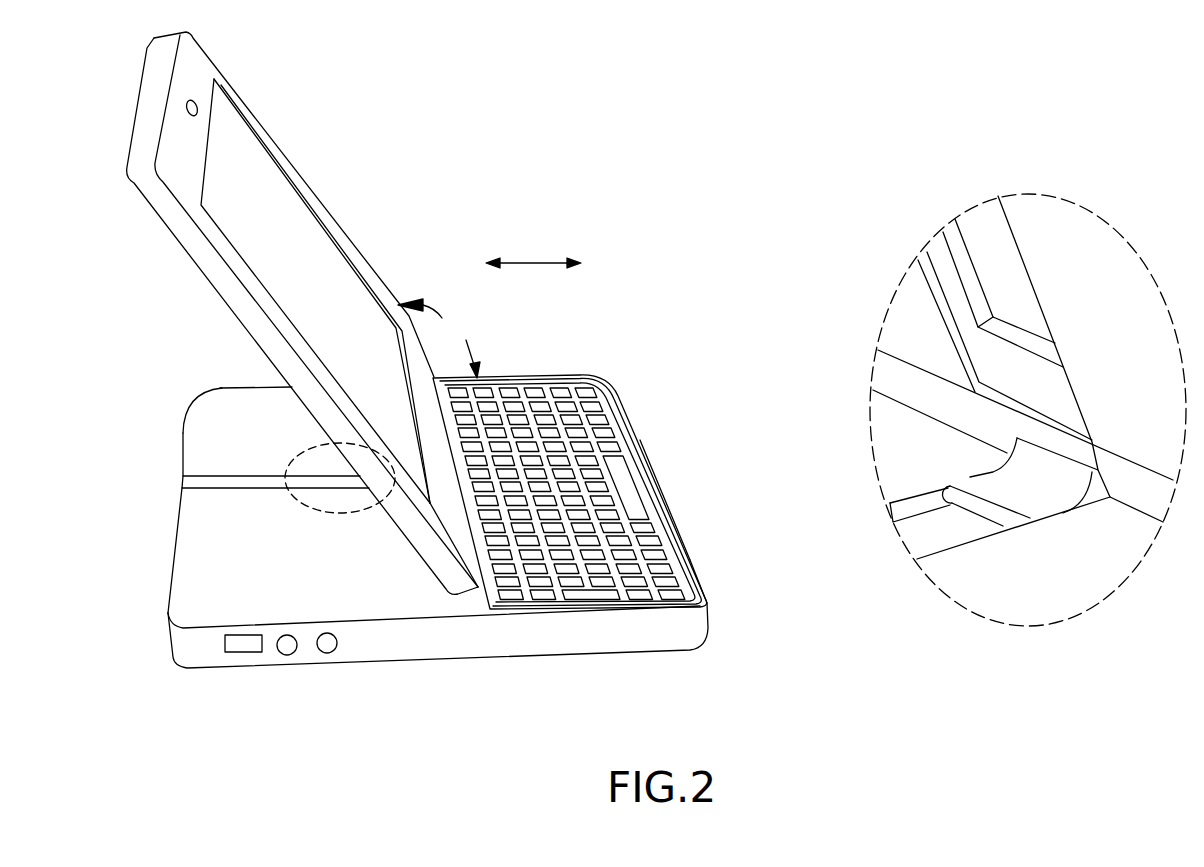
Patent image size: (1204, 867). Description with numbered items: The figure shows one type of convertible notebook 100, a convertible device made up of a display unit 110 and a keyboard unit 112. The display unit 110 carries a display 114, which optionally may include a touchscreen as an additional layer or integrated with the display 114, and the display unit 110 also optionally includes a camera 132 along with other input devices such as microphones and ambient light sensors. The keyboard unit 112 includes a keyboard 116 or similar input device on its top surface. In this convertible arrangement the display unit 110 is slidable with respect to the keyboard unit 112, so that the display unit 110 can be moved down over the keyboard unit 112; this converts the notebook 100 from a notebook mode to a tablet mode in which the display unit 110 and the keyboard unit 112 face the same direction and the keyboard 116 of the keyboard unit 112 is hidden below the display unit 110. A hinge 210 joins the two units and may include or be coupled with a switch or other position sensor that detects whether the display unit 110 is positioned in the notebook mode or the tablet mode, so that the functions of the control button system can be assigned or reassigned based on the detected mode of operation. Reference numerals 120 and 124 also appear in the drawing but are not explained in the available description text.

The notebook 100 is at (820, 103).
The display unit 110 is at (613, 313).
The keyboard unit 112 is at (670, 474).
The display 114 is at (278, 207).
The keyboard 116 is at (555, 378).
The side edge of base housing 120 is at (680, 484).
The front edge of base housing 124 is at (698, 560).
The camera 132 is at (200, 103).
The hinge 210 is at (330, 513).